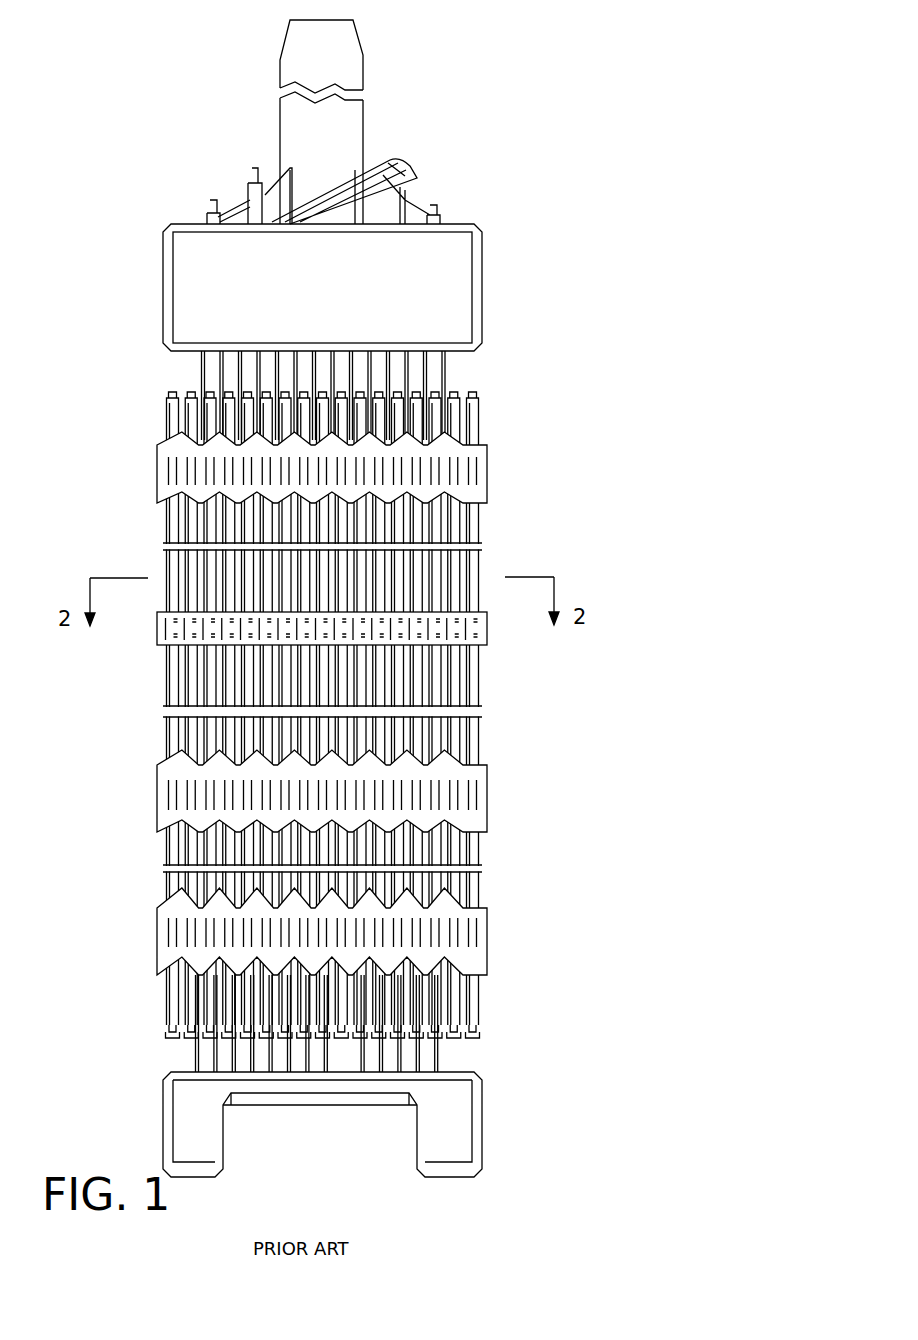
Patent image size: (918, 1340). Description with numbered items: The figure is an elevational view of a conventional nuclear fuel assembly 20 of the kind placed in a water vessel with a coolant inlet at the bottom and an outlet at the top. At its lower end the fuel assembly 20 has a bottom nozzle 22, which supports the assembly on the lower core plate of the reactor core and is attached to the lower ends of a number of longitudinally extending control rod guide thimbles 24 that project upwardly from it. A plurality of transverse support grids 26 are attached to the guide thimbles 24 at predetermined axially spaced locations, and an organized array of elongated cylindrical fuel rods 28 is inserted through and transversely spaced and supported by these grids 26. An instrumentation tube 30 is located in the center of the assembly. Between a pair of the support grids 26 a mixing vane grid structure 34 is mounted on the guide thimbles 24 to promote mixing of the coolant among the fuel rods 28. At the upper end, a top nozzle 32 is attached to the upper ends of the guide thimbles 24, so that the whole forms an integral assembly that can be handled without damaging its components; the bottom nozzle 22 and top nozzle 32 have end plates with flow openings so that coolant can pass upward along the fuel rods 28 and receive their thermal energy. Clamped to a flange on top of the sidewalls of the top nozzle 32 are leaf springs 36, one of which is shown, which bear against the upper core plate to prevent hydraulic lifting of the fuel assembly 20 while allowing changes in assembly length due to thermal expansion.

The fuel assembly 20 is at (537, 448).
The bottom nozzle 22 is at (462, 1142).
The control rod guide thimbles 24 is at (203, 376).
The support grids 26 is at (487, 810).
The fuel rods 28 is at (480, 424).
The instrumentation tube 30 is at (323, 1053).
The top nozzle 32 is at (465, 310).
The mixing vane grid structure 34 is at (495, 634).
The leaf springs 36 is at (393, 163).